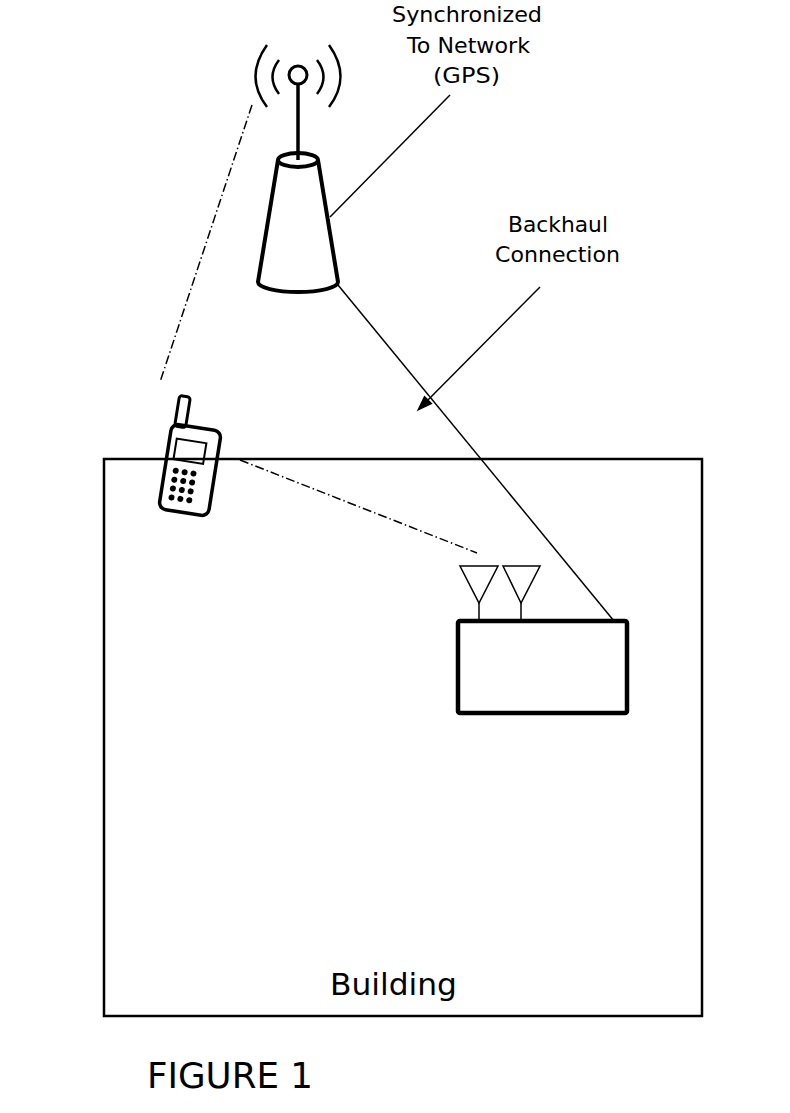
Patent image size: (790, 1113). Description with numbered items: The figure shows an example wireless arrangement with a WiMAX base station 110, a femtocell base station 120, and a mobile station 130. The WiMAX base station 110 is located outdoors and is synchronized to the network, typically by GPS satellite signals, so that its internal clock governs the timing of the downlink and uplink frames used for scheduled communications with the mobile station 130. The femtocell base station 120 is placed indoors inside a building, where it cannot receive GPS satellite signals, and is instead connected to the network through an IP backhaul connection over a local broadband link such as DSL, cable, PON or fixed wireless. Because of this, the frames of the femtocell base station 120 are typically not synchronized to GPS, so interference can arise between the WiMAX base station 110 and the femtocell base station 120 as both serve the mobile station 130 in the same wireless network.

The WiMAX base station 110 is at (199, 166).
The femtocell base station 120 is at (560, 716).
The mobile station 130 is at (189, 505).